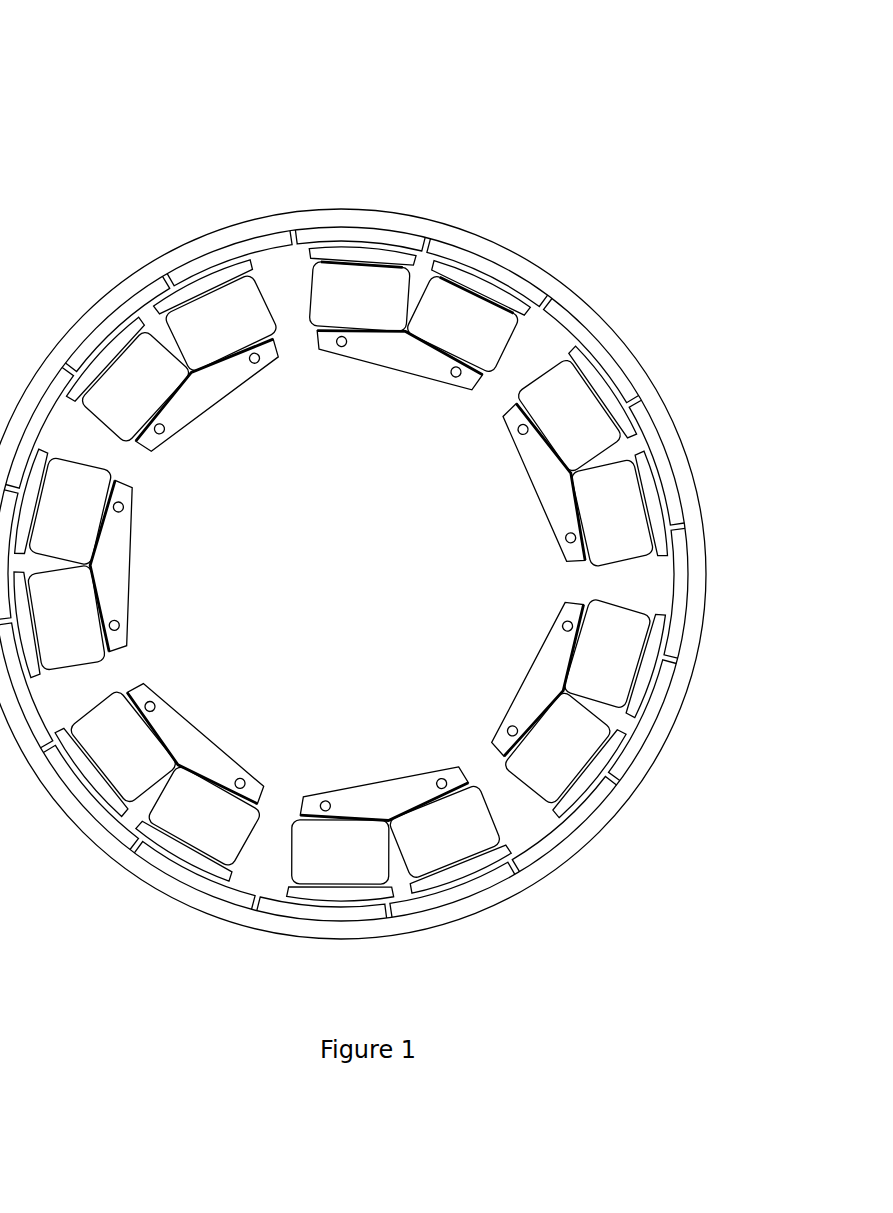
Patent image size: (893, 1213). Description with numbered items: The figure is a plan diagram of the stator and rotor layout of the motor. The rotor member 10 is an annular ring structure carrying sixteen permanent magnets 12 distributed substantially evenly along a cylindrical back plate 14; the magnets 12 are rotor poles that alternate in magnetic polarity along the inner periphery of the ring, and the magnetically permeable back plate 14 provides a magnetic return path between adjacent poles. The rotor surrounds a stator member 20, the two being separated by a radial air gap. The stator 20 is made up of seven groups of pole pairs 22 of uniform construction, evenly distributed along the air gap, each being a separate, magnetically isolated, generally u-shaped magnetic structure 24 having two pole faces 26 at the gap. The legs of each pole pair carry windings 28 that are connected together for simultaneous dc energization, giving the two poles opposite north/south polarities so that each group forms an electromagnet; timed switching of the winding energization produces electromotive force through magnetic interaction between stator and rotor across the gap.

The rotor member 10 is at (435, 469).
The permanent magnets 12 is at (577, 330).
The cylindrical back plate 14 is at (550, 275).
The stator member 20 is at (170, 507).
The pole pairs 22 is at (335, 327).
The u-shaped magnetic structure 24 is at (389, 367).
The pole faces 26 is at (350, 255).
The windings 28 is at (360, 300).